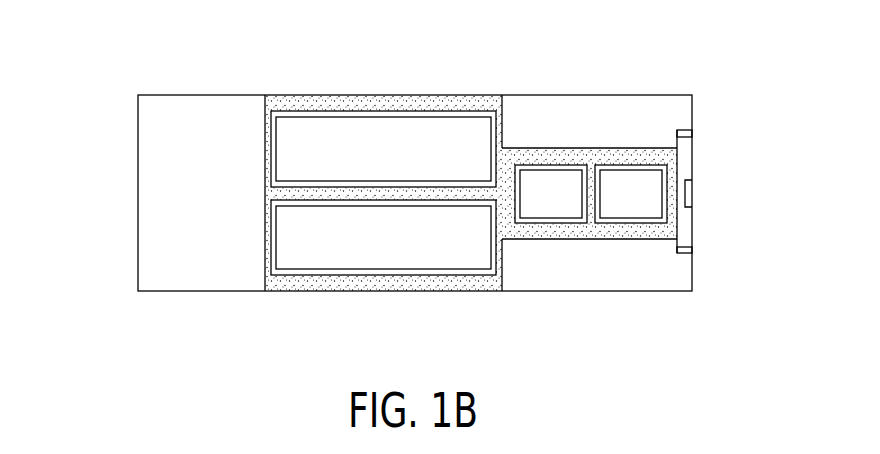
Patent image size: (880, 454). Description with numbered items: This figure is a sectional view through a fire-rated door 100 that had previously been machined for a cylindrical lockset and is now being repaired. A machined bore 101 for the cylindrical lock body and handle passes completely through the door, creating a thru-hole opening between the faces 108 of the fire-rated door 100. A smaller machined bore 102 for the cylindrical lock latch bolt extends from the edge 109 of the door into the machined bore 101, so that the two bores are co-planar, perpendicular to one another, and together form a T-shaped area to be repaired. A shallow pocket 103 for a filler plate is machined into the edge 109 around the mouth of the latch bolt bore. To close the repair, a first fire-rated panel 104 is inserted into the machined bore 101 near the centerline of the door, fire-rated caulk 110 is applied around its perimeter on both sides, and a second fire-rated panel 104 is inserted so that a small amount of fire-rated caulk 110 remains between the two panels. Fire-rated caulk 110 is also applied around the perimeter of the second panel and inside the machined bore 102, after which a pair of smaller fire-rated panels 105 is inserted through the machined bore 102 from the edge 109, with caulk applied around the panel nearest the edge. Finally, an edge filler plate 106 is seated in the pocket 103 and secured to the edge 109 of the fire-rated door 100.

The fire-rated door 100 is at (128, 187).
The machined bore for cylindrical lock body and handle 101 is at (284, 97).
The machined bore for cylindrical lock latch bolt 102 is at (668, 157).
The pocket for filler plate 103 is at (695, 257).
The fire-rated panel 104 is at (437, 145).
The fire-rated panel 105 is at (555, 180).
The edge filler plate 106 is at (702, 233).
The face 108 is at (190, 95).
The edge 109 is at (693, 108).
The fire-rated caulk 110 is at (330, 97).